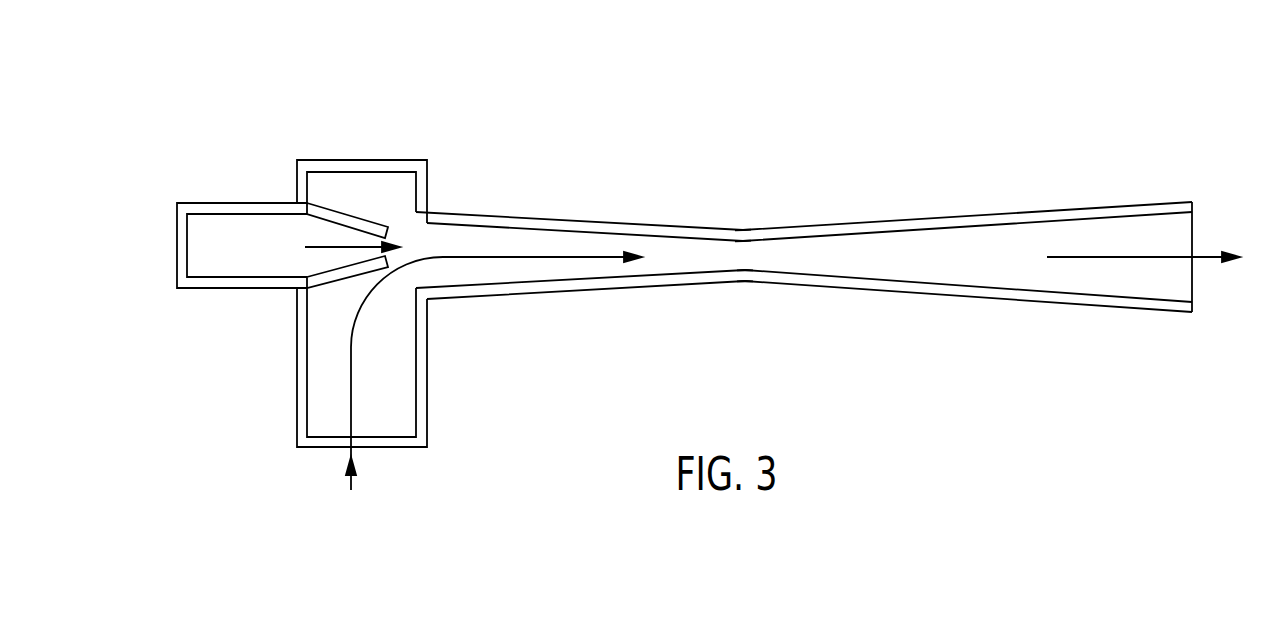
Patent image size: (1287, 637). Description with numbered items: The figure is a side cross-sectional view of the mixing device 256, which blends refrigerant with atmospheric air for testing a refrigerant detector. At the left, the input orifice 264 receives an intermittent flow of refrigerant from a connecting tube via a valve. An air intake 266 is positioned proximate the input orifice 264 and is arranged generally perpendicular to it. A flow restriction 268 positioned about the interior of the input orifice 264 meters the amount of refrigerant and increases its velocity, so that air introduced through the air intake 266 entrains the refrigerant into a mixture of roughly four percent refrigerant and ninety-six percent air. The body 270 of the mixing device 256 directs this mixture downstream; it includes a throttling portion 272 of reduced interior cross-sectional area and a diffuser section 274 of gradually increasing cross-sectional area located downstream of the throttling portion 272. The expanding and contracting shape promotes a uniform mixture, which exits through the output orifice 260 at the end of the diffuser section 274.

The mixing device 256 is at (953, 120).
The output orifice 260 is at (1195, 233).
The input orifice 264 is at (176, 257).
The air intake 266 is at (395, 422).
The flow restriction 268 is at (345, 213).
The body 270 is at (477, 296).
The throttling portion 272 is at (745, 282).
The diffuser section 274 is at (1075, 303).